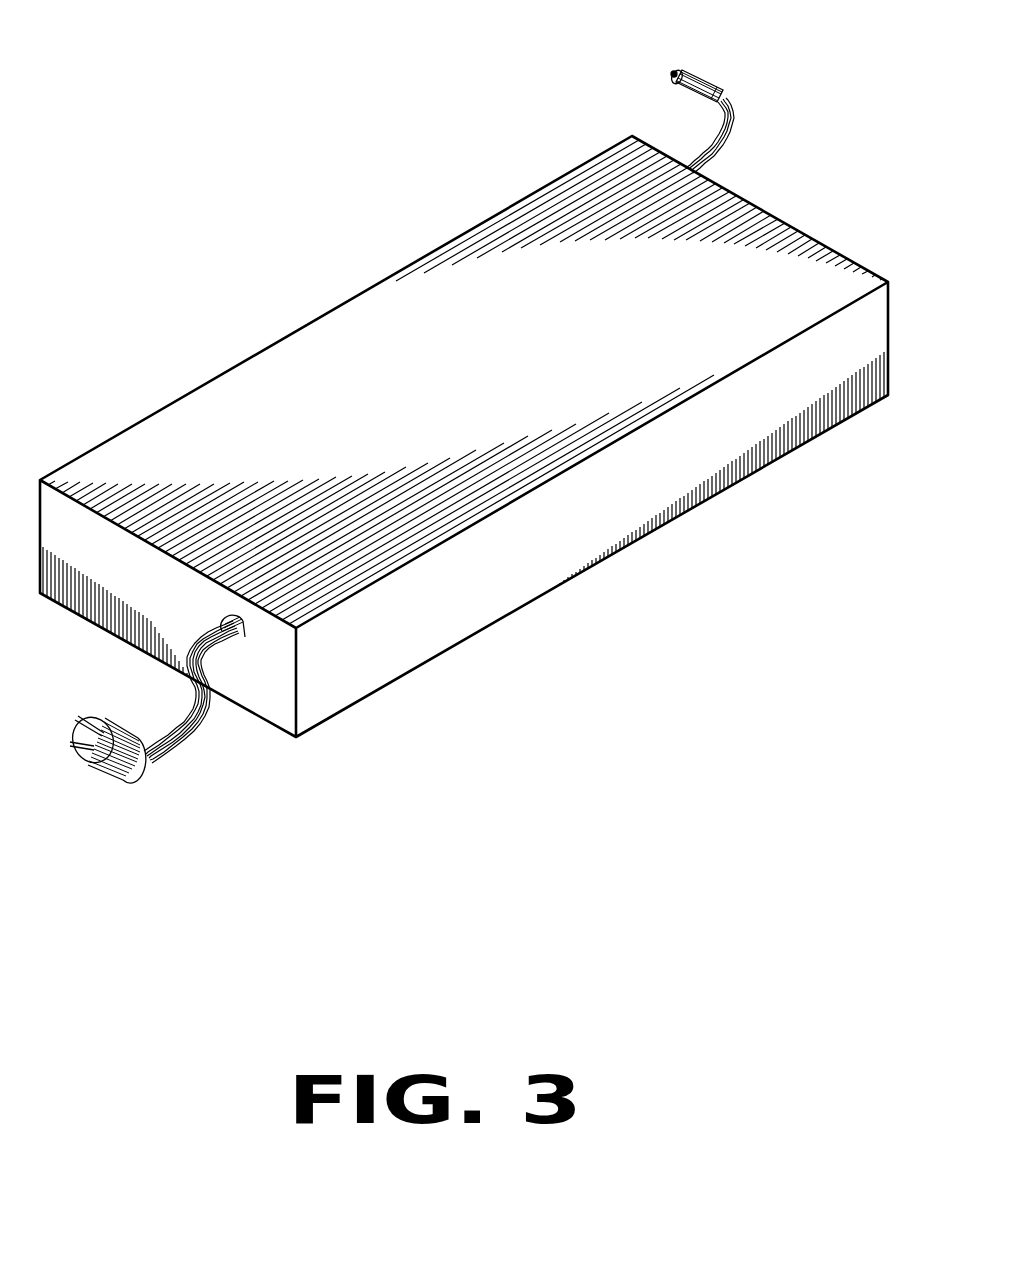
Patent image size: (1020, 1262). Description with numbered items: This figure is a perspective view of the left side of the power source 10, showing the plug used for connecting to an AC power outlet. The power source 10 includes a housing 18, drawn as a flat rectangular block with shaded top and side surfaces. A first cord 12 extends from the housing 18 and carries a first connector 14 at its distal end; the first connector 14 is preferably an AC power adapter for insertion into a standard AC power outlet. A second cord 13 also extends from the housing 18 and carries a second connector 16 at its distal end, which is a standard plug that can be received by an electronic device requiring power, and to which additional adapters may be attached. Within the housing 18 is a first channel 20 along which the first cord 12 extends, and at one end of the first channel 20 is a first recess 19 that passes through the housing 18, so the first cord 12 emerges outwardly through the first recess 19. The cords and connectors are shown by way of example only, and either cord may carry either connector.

The power source 10 is at (546, 599).
The first cord 12 is at (205, 725).
The second cord 13 is at (731, 127).
The first connector 14 is at (138, 781).
The second connector 16 is at (720, 78).
The housing 18 is at (700, 507).
The first recess 19 is at (245, 641).
The first channel 20 is at (246, 640).